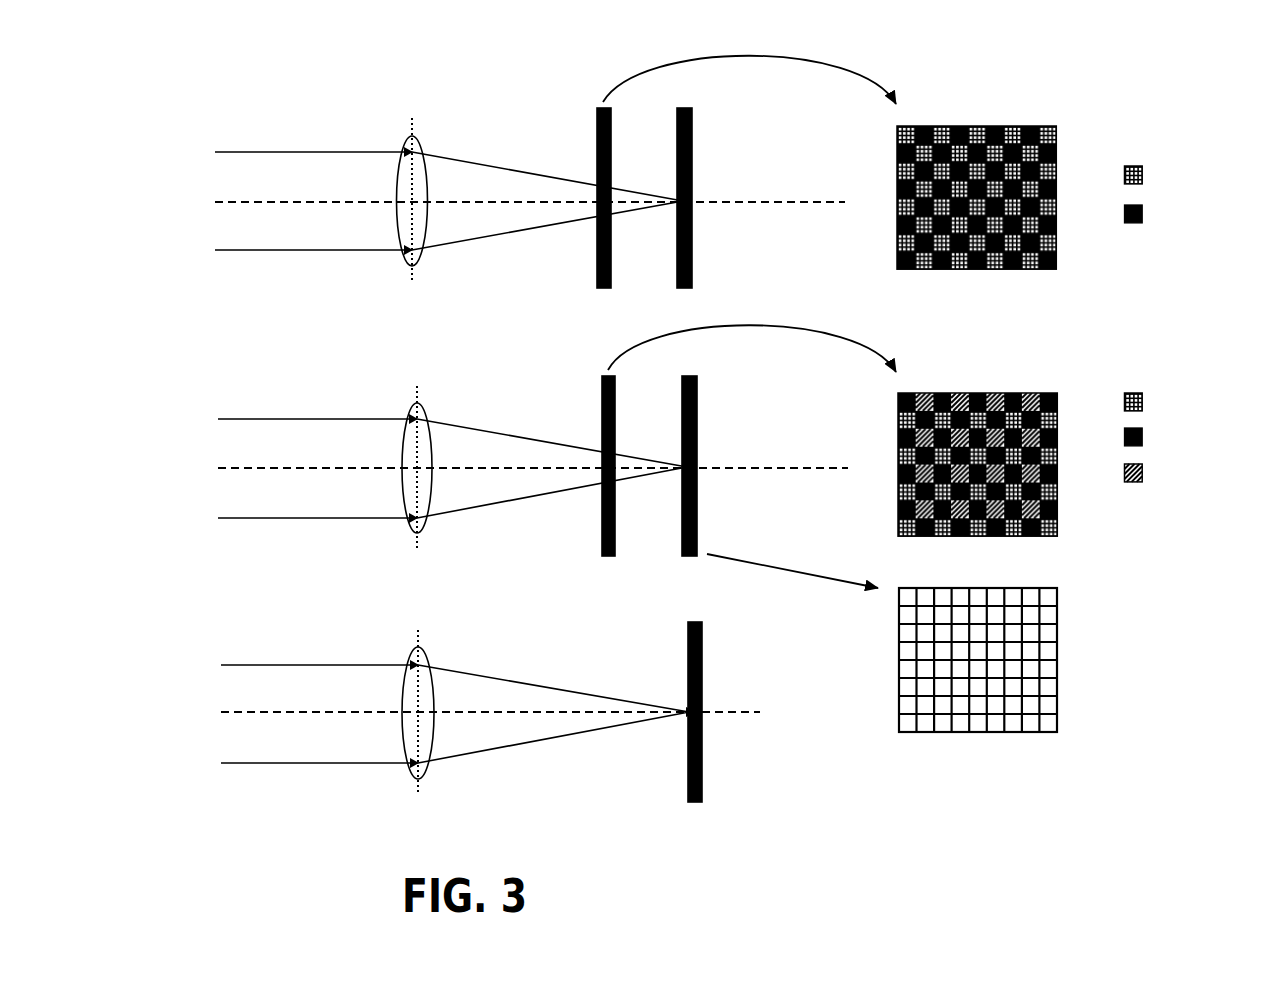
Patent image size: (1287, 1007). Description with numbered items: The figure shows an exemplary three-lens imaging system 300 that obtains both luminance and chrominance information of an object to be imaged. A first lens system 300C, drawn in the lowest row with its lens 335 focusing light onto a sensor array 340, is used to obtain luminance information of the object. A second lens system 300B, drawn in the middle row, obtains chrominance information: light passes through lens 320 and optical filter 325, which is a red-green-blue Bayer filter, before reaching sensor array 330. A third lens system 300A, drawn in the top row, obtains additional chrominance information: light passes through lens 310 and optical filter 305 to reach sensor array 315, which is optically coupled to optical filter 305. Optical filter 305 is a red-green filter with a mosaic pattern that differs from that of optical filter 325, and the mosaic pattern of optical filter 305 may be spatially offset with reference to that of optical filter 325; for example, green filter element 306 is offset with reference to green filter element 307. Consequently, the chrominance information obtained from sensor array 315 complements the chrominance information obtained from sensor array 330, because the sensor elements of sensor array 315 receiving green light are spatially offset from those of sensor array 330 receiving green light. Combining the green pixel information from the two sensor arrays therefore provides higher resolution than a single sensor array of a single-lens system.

The three-lens imaging system 300 is at (916, 40).
The third lens system 300A is at (336, 70).
The second lens system 300B is at (336, 333).
The first lens system 300C is at (338, 589).
The optical filter 305 is at (592, 137).
The green filter element 306 is at (1058, 152).
The green filter element 307 is at (1060, 402).
The lens 310 is at (450, 128).
The sensor array 315 is at (698, 167).
The lens 320 is at (462, 400).
The optical filter 325 is at (595, 410).
The sensor array 330 is at (705, 410).
The lens 335 is at (458, 643).
The image sensor 340 is at (680, 672).